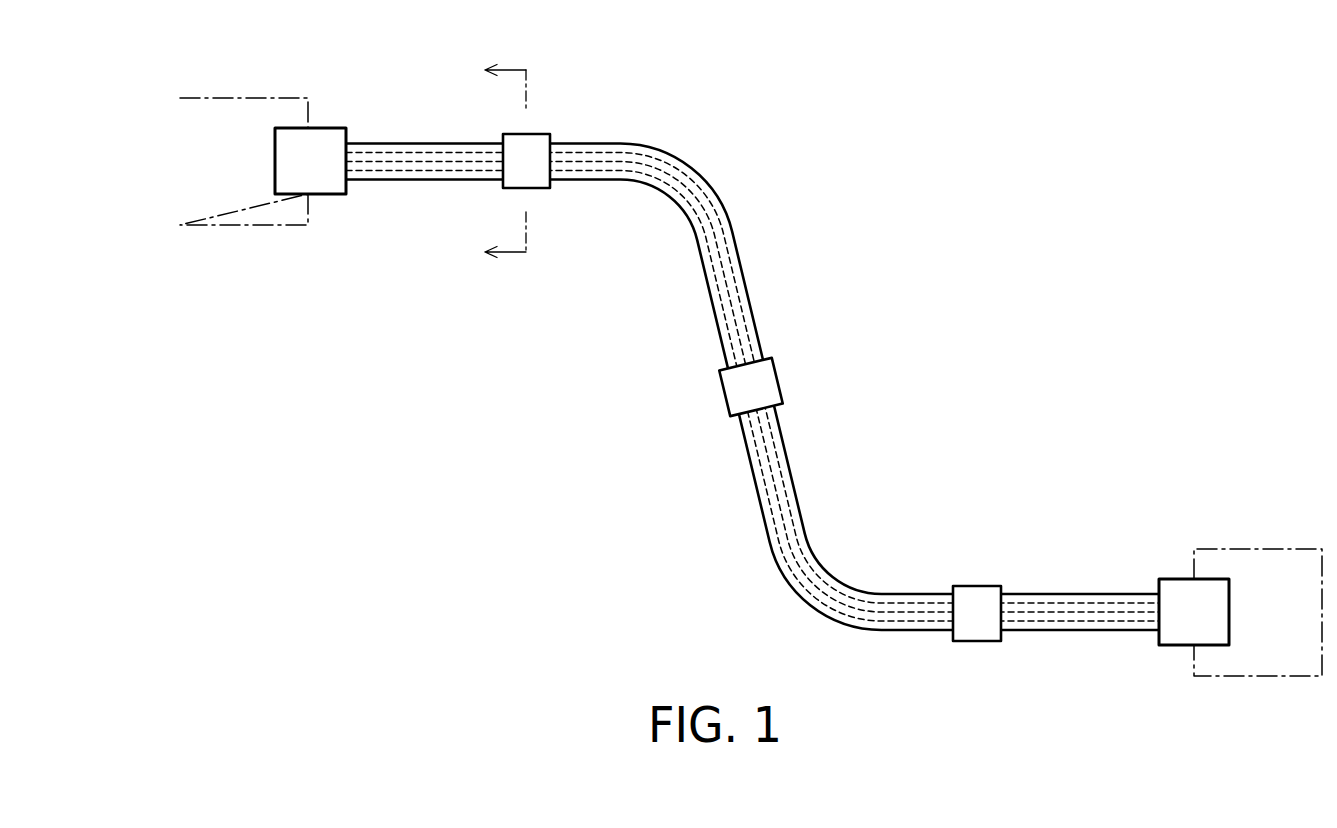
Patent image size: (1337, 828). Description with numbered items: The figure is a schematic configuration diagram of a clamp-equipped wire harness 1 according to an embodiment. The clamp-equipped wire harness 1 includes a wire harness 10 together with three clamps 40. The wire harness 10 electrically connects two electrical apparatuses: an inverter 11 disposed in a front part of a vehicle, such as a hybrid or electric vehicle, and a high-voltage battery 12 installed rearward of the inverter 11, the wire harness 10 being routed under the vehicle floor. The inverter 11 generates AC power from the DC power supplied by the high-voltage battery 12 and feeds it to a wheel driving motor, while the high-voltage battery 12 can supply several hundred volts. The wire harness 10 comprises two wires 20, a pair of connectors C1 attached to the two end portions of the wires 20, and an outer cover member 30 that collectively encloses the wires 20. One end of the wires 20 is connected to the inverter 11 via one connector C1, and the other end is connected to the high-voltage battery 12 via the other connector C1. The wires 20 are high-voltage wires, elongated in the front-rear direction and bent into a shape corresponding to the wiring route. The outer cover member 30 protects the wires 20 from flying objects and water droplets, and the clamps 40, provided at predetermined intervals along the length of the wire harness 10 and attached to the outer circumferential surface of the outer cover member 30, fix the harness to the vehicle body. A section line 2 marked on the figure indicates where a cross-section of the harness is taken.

The clamp-equipped wire harness 1 is at (1039, 162).
The wire harness 10 is at (696, 153).
The wires 20 is at (732, 277).
The outer cover member 30 is at (723, 203).
The clamps 40 is at (543, 133).
The inverter 11 is at (243, 98).
The high-voltage battery 12 is at (1258, 549).
The connectors C1 is at (330, 128).
The section line for FIG. 2 is at (493, 163).